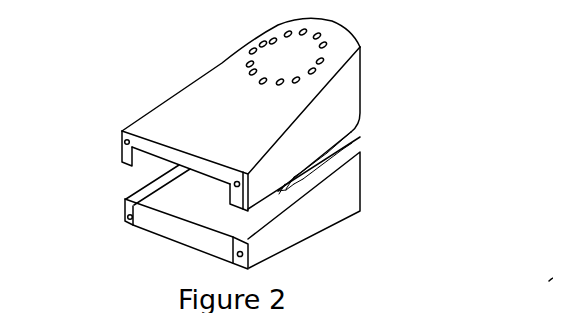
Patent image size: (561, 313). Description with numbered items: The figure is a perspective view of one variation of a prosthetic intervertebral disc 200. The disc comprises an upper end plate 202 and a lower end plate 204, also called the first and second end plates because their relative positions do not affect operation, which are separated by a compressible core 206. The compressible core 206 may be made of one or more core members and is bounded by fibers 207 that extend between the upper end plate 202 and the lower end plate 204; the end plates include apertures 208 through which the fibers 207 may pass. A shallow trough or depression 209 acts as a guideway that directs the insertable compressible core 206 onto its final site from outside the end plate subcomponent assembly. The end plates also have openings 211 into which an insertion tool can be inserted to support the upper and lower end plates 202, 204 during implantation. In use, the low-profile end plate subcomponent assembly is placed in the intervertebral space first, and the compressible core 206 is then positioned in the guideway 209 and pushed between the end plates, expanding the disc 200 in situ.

The prosthetic intervertebral disc 200 is at (261, 138).
The upper end plate 202 is at (256, 109).
The lower end plate 204 is at (237, 203).
The compressible core 206 is at (386, 130).
The fibers 207 is at (356, 136).
The apertures 208 is at (320, 62).
The trough 209 is at (176, 212).
The openings 211 is at (127, 215).